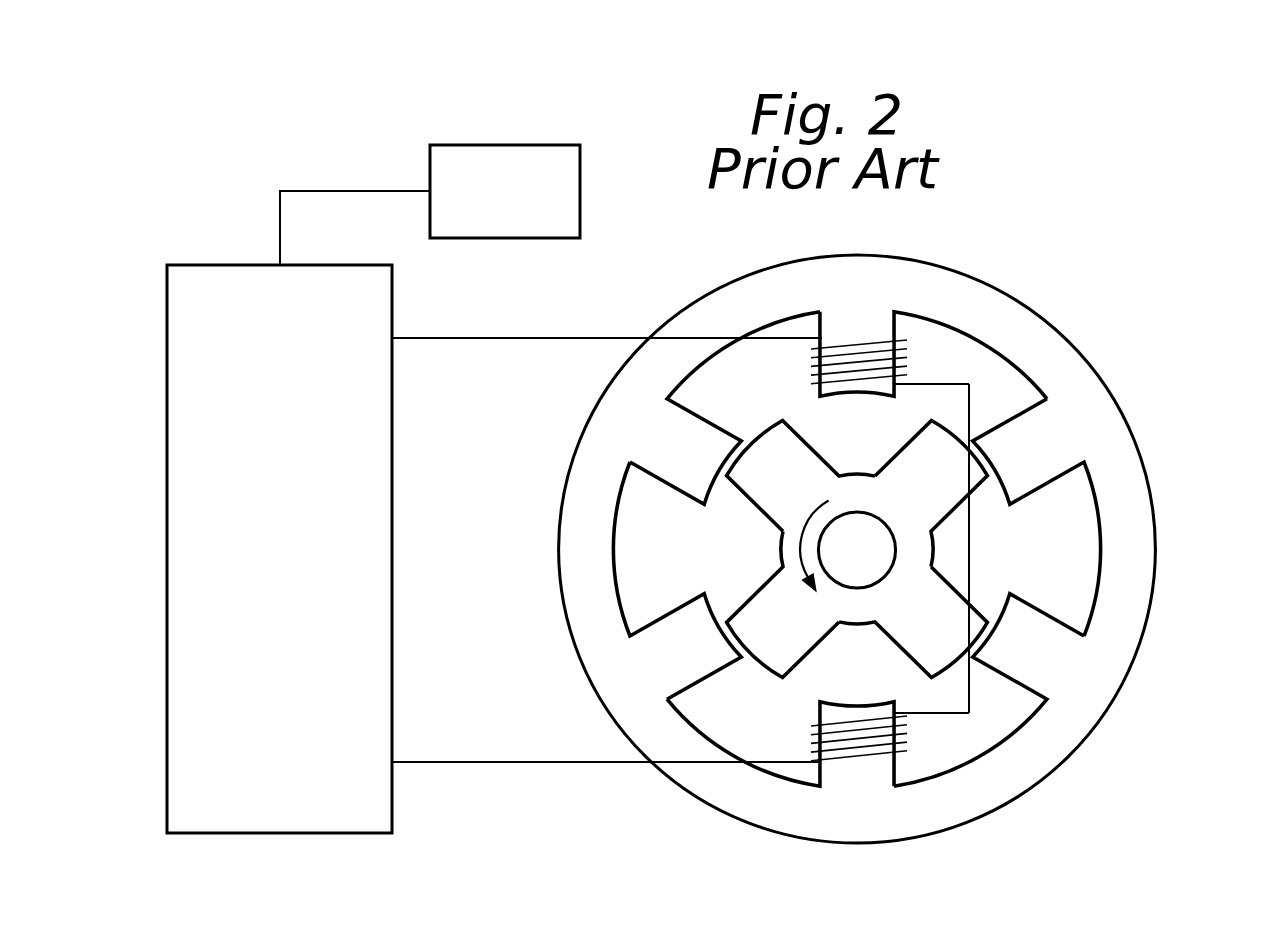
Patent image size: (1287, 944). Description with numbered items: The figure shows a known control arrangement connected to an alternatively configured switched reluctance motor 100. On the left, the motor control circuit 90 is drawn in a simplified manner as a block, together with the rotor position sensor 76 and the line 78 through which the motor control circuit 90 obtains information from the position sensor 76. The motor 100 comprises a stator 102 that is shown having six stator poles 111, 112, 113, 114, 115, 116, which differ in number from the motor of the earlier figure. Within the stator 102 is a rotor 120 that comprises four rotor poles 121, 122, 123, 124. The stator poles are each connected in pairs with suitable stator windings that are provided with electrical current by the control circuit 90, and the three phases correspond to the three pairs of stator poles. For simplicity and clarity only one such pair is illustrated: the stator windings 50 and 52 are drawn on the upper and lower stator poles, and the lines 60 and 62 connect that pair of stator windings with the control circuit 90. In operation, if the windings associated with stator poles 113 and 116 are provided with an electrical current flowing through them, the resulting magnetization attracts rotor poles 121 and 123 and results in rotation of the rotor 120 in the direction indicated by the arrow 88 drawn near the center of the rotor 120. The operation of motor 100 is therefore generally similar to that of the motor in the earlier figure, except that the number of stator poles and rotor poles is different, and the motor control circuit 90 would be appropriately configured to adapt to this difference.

The stator winding 50 is at (813, 383).
The stator winding 52 is at (897, 752).
The line 60 is at (523, 338).
The line 62 is at (545, 762).
The rotor position sensor 76 is at (505, 143).
The line 78 is at (358, 190).
The arrow 88 is at (778, 546).
The motor control circuit 90 is at (208, 263).
The motor 100 is at (1071, 249).
The stator 102 is at (903, 549).
The stator pole 111 is at (929, 376).
The stator pole 112 is at (1037, 517).
The stator pole 113 is at (989, 690).
The stator pole 114 is at (780, 737).
The stator pole 115 is at (677, 580).
The stator pole 116 is at (725, 408).
The rotor 120 is at (857, 553).
The rotor pole 121 is at (801, 476).
The rotor pole 122 is at (931, 494).
The rotor pole 123 is at (913, 622).
The rotor pole 124 is at (783, 604).